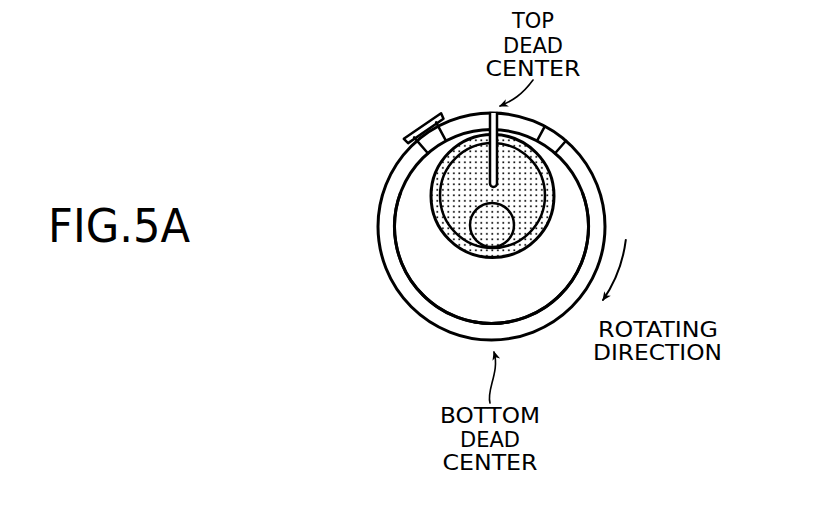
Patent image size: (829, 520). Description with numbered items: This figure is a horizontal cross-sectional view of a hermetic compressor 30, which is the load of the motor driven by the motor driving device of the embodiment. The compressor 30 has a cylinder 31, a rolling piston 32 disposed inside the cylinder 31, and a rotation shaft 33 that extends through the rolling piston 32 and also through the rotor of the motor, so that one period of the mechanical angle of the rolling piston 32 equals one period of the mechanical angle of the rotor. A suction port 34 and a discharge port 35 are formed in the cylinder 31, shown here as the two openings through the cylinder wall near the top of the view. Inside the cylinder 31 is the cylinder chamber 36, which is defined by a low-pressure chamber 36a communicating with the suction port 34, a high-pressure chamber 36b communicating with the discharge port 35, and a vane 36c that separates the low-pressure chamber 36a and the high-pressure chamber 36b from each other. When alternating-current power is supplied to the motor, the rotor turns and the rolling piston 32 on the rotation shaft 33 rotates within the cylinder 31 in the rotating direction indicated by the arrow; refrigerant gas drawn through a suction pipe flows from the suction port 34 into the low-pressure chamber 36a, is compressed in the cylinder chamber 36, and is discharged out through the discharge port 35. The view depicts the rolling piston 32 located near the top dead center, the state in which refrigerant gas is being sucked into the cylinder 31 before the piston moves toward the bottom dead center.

The compressor 30 is at (382, 74).
The cylinder 31 is at (535, 119).
The rolling piston 32 is at (547, 193).
The rotation shaft 33 is at (514, 225).
The suction port 34 is at (560, 136).
The discharge port 35 is at (424, 126).
The cylinder chamber 36 is at (503, 282).
The low-pressure chamber 36a is at (553, 252).
The high-pressure chamber 36b is at (422, 252).
The vane 36c is at (487, 170).